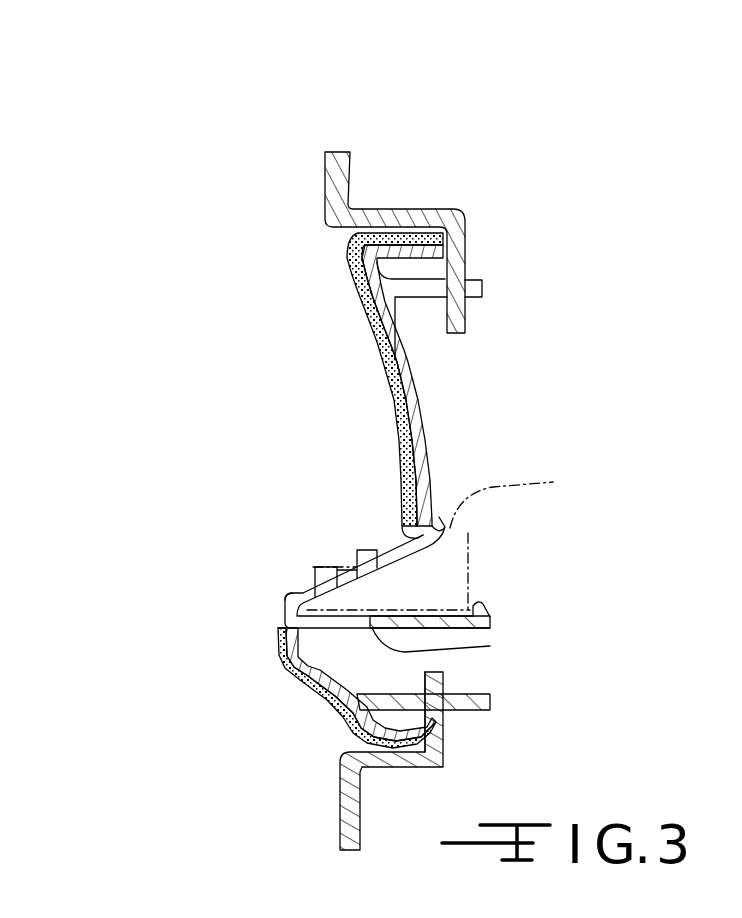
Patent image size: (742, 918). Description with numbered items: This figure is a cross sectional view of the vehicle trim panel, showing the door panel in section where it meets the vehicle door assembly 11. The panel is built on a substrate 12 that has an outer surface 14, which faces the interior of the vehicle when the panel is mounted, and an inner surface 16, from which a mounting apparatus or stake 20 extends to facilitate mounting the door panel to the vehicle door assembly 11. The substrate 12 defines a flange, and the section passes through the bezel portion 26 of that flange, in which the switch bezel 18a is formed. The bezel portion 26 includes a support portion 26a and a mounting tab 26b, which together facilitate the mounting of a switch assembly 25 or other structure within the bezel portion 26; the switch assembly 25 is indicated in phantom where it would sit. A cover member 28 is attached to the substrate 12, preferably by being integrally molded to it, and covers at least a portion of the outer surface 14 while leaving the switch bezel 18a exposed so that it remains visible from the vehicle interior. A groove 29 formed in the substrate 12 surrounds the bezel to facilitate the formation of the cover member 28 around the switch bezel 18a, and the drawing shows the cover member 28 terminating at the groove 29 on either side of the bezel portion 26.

The vehicle door assembly 11 is at (400, 208).
The substrate 12 is at (423, 407).
The outer surface 14 is at (398, 348).
The inner surface 16 is at (433, 433).
The switch bezel 18a is at (347, 567).
The mounting apparatus or stake 20 is at (477, 280).
The switch assembly 25 is at (455, 539).
The bezel portion 26 is at (440, 567).
The support portion 26a is at (440, 653).
The mounting tab 26b is at (483, 607).
The cover member 28 is at (353, 281).
The groove 29 is at (402, 528).